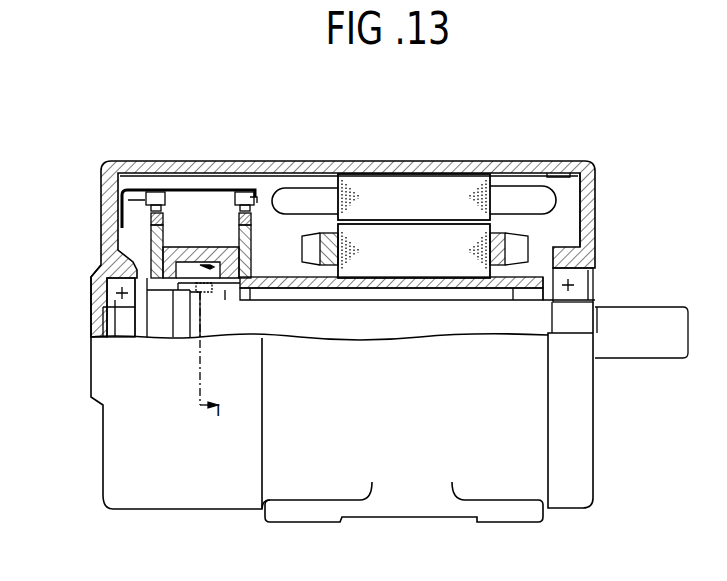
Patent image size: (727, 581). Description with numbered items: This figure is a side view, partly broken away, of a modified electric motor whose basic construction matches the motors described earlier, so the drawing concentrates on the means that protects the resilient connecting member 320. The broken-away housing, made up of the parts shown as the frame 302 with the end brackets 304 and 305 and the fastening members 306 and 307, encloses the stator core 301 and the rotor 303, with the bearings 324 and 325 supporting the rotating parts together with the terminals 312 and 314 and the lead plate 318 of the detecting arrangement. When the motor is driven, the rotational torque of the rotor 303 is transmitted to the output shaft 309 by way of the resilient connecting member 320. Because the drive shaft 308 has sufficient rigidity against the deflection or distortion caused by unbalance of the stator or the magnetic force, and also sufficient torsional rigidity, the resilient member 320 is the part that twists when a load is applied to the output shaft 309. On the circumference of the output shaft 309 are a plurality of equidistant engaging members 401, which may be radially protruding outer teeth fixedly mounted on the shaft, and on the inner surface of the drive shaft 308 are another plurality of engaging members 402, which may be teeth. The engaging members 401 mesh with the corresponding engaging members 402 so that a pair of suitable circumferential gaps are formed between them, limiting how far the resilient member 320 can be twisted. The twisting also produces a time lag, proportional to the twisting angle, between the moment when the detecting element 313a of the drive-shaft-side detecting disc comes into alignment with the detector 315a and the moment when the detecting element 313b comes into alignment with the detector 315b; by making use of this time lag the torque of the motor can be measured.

The stator core 301 is at (465, 181).
The frame 302 is at (530, 163).
The rotor 303 is at (431, 240).
The end bracket 304 is at (107, 177).
The end bracket 305 is at (597, 206).
The bolt 306 is at (122, 300).
The bolt 307 is at (578, 285).
The drive shaft 308 is at (332, 278).
The output shaft 309 is at (447, 312).
The terminal 312 is at (240, 247).
The detecting element 313a is at (251, 223).
The detecting element 313b is at (152, 219).
The terminal 314 is at (152, 241).
The detector 315a is at (243, 192).
The detector 315b is at (156, 192).
The lead plate 318 is at (204, 188).
The resilient connecting member 320 is at (207, 258).
The bearing 324 is at (245, 295).
The bearing 325 is at (530, 298).
The engaging members 401 is at (197, 290).
The engaging members 402 is at (207, 290).